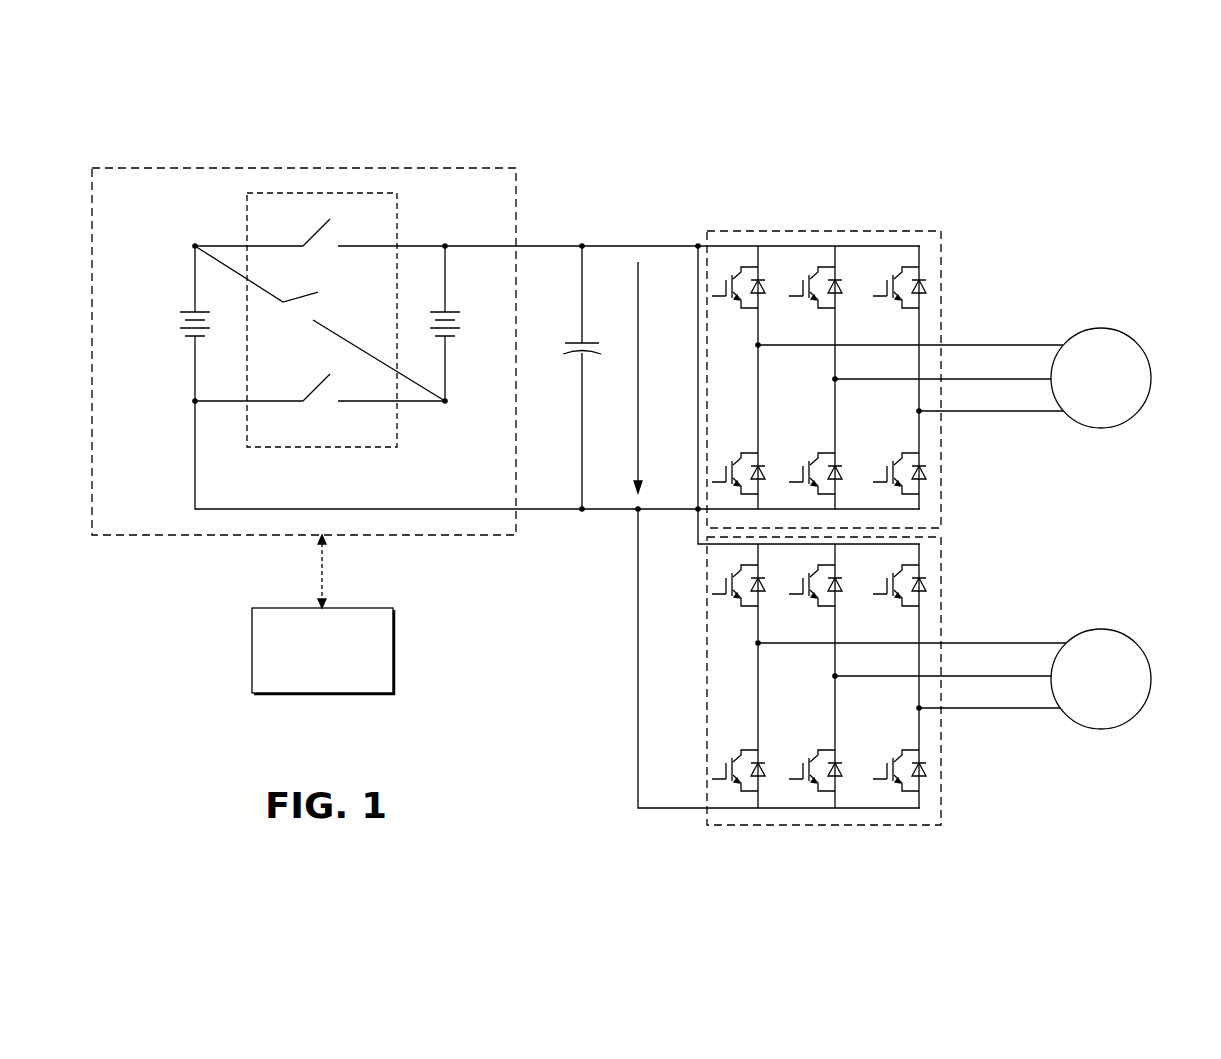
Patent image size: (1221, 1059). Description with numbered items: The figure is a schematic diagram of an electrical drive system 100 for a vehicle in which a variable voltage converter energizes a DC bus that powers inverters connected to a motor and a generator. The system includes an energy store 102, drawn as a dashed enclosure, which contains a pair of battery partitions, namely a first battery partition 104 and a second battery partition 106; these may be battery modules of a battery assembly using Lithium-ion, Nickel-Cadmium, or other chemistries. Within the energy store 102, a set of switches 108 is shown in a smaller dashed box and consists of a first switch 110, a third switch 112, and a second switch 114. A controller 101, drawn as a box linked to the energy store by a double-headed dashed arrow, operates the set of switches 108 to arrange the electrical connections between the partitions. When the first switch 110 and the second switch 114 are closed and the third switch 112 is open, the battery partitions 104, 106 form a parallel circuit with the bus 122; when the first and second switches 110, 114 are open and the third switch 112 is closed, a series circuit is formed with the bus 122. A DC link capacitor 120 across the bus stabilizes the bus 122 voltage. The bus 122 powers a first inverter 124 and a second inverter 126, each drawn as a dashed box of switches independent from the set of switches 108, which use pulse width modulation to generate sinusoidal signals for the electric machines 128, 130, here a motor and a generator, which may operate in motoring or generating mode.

The electrical drive system 100 is at (916, 96).
The controller 101 is at (341, 662).
The energy store 102 is at (409, 160).
The first battery partition 104 is at (182, 345).
The second battery partition 106 is at (453, 337).
The set of switches 108 is at (316, 458).
The first switch S1 110 is at (318, 233).
The third switch S3 112 is at (293, 308).
The second switch S2 114 is at (318, 388).
The DC link capacitor 120 is at (592, 337).
The bus Vdc 122 is at (640, 322).
The inverter 124 is at (825, 222).
The inverter 126 is at (824, 838).
The electric machine 128 is at (1134, 333).
The electric machine 130 is at (1134, 633).